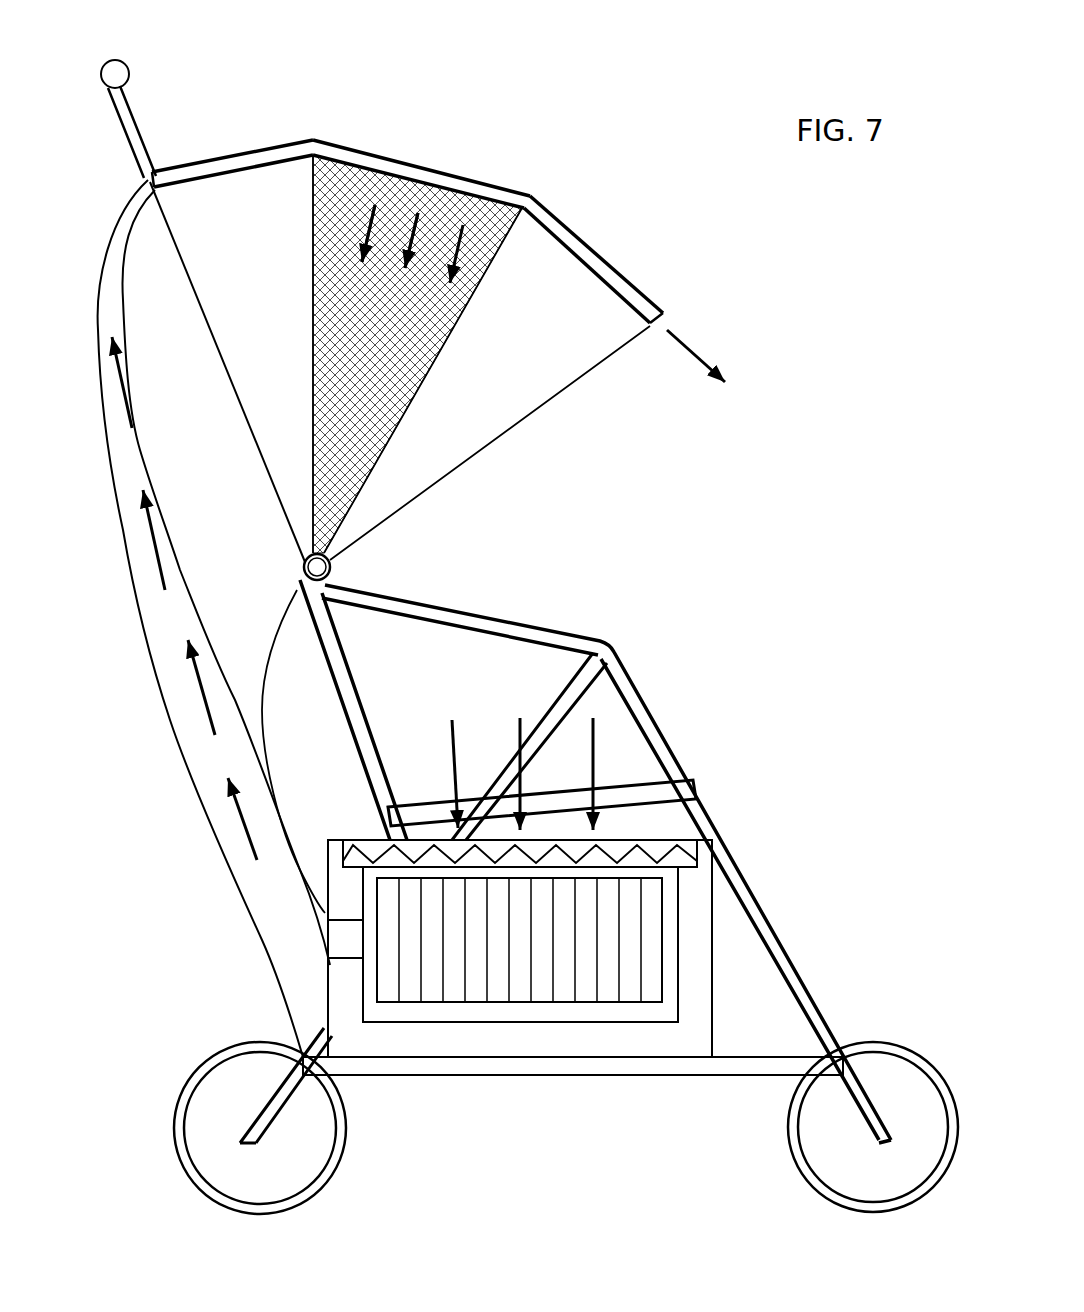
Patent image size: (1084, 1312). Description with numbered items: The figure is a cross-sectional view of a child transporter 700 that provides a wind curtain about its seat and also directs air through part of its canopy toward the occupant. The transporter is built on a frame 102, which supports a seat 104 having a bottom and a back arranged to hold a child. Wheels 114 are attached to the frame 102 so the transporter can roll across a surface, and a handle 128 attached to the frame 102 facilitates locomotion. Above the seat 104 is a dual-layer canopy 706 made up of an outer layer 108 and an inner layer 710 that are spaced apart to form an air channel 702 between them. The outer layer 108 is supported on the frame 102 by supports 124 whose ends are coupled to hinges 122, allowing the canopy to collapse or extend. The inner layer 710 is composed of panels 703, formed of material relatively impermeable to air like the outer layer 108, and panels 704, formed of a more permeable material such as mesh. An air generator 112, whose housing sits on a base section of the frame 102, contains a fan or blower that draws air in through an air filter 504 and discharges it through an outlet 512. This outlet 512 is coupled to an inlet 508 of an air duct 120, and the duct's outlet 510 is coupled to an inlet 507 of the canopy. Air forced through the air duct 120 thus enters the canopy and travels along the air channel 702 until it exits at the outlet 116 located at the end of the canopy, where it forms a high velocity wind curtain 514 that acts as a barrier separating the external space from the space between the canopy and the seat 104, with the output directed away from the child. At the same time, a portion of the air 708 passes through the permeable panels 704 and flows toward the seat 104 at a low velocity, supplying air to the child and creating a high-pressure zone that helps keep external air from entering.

The child transporter 700 is at (676, 163).
The handle 128 is at (117, 58).
The outer layer 108 is at (442, 259).
The panels 703 is at (402, 236).
The dual-layer canopy 706 is at (408, 162).
The air channel 702 is at (467, 190).
The inner layer 710 is at (578, 266).
The panels 704 is at (340, 167).
The air 708 is at (363, 227).
The outlet 116 is at (665, 318).
The wind curtain 514 is at (692, 356).
The supports 124 is at (312, 360).
The hinges 122 is at (335, 568).
The air duct 120 is at (145, 638).
The outlet 510 is at (127, 212).
The inlet 507 is at (142, 182).
The frame 102 is at (642, 679).
The seat 104 is at (428, 795).
The outlet 512 is at (342, 938).
The air filter 504 is at (380, 838).
The air generator 112 is at (716, 1008).
The inlet 508 is at (325, 938).
The wheels 114 is at (173, 1128).